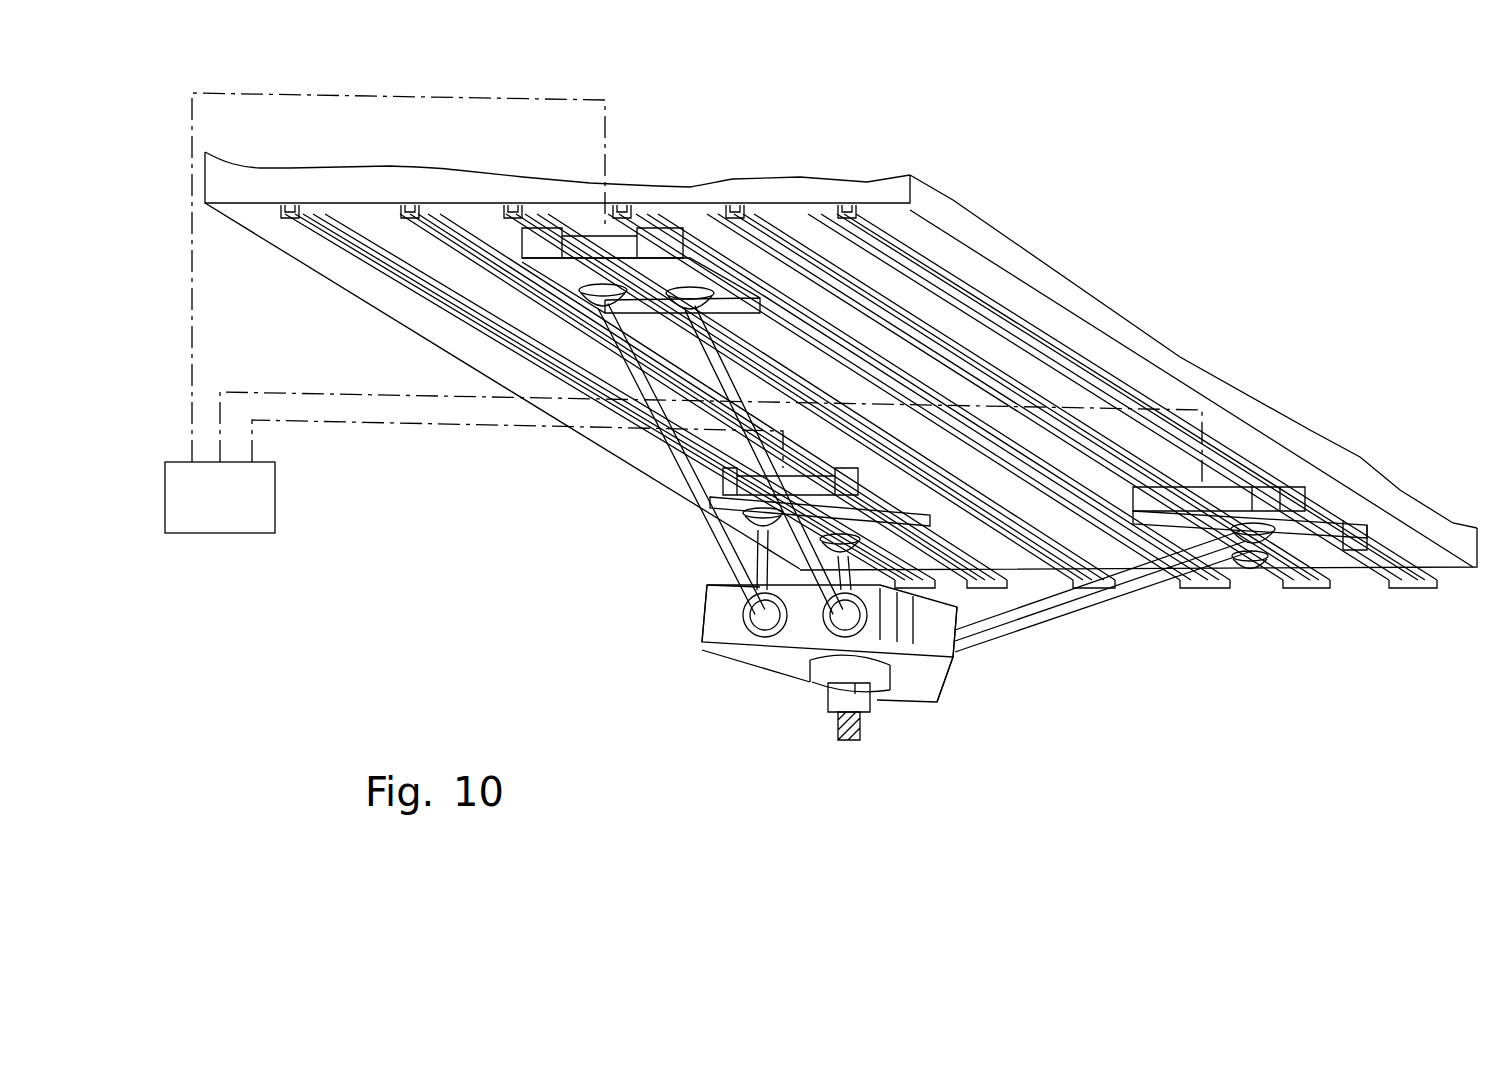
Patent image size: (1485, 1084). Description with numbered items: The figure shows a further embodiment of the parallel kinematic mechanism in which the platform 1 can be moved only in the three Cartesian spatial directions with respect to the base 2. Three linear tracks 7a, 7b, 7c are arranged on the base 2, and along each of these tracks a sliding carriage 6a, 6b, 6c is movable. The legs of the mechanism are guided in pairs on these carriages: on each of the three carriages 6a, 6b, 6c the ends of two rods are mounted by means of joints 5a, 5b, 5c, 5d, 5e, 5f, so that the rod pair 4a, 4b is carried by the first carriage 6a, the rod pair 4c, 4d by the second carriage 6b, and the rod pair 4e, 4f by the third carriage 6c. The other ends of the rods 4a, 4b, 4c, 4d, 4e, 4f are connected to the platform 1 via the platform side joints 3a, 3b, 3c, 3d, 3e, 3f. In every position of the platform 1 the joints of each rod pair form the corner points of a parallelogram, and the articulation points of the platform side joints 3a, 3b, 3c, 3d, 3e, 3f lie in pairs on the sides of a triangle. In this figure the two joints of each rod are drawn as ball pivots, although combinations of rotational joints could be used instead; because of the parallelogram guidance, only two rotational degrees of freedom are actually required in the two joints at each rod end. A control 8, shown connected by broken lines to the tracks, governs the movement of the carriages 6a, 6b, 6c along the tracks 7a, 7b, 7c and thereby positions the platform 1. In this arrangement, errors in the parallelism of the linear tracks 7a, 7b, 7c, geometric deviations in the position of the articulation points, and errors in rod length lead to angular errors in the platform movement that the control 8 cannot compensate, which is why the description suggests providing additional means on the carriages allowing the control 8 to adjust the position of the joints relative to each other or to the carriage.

The platform 1 is at (900, 690).
The base 2 is at (1000, 238).
The joint 3a is at (832, 622).
The joint 3b is at (748, 622).
The joint 3c is at (715, 578).
The joint 3d is at (727, 560).
The joint 3e is at (958, 675).
The joint 3f is at (950, 703).
The rod 4a is at (762, 420).
The rod 4b is at (668, 415).
The rod 4c is at (767, 568).
The rod 4d is at (850, 560).
The rod 4e is at (1140, 580).
The rod 4f is at (1086, 612).
The joint 5a is at (690, 287).
The joint 5b is at (600, 302).
The joint 5c is at (770, 517).
The joint 5d is at (852, 548).
The joint 5e is at (1262, 552).
The joint 5f is at (1243, 562).
The sliding carriage 6a is at (650, 236).
The sliding carriage 6b is at (880, 505).
The sliding carriage 6c is at (1322, 558).
The linear track 7a is at (291, 204).
The linear track 7b is at (517, 204).
The linear track 7c is at (738, 205).
The control 8 is at (245, 525).